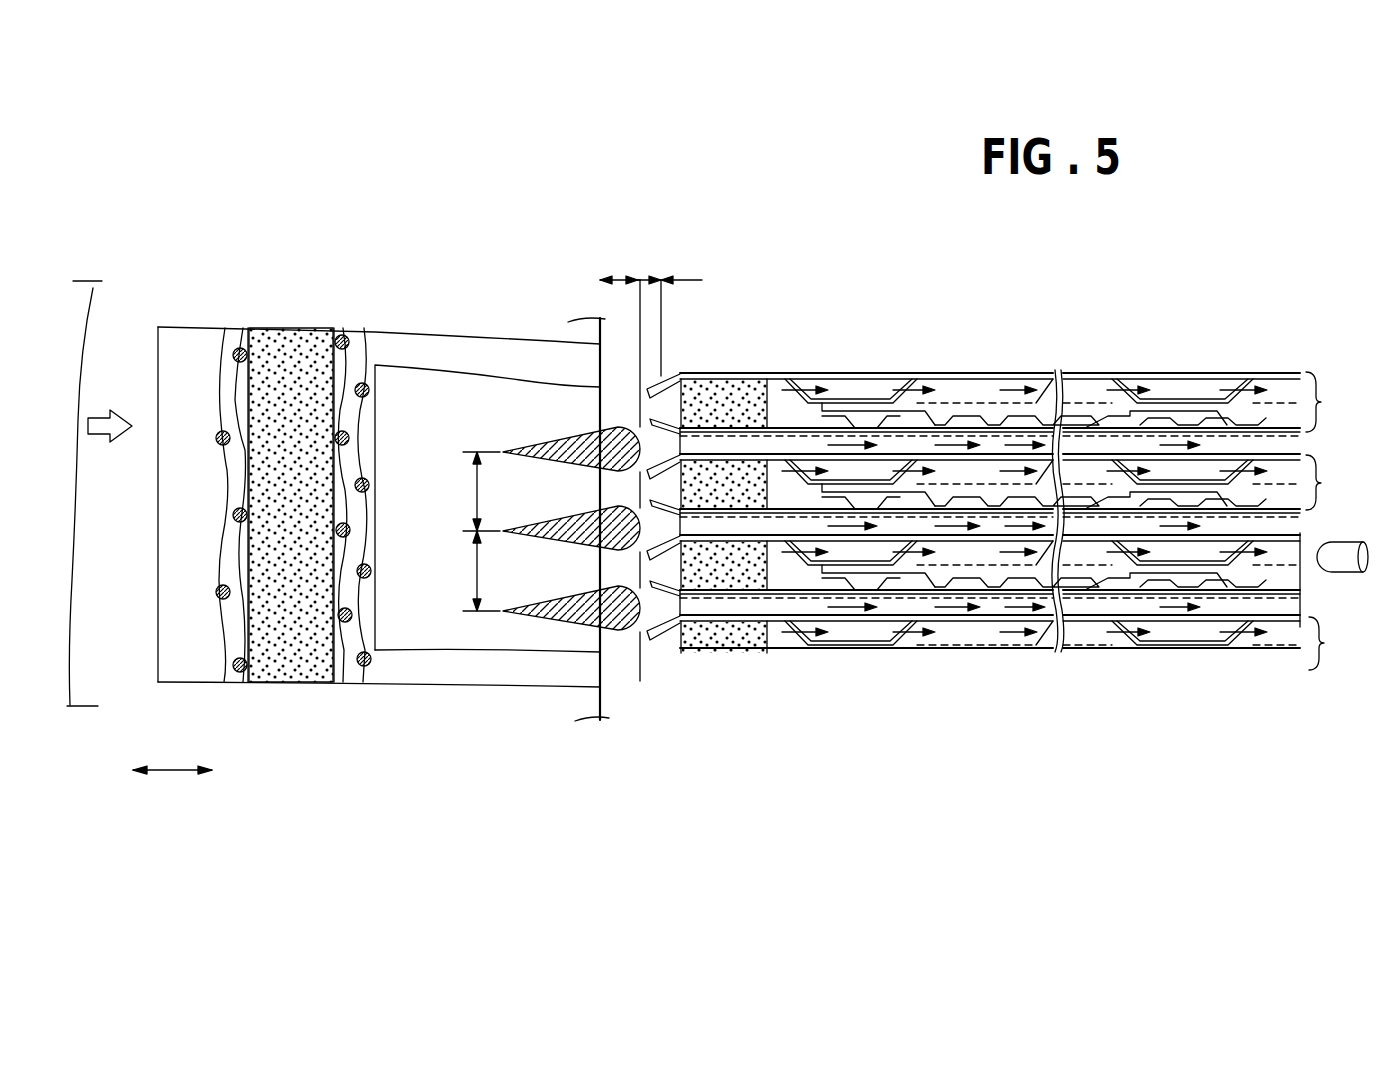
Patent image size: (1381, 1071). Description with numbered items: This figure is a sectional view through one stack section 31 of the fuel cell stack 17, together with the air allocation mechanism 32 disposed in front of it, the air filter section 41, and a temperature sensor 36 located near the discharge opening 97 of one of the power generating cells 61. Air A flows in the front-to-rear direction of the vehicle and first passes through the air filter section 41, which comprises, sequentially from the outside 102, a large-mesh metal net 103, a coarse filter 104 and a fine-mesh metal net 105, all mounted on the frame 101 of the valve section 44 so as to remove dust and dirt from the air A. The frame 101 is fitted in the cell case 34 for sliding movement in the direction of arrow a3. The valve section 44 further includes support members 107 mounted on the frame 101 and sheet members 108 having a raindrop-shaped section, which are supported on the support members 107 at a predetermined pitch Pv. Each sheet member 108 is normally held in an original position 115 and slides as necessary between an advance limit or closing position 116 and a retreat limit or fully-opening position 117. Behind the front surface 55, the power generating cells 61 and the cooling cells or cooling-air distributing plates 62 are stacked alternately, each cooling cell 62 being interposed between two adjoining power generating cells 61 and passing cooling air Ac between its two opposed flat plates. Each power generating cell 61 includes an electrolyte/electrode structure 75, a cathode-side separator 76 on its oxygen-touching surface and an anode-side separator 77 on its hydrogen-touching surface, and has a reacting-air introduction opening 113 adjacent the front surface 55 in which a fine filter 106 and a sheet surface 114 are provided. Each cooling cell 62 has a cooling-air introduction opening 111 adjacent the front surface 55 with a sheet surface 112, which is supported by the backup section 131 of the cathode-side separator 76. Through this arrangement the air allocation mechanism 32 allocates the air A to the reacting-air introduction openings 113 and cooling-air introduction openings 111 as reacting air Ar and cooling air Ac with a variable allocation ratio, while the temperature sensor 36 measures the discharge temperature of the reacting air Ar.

The fuel cell stack 17 is at (492, 422).
The stack section 31 is at (993, 501).
The air allocation mechanism 32 is at (523, 280).
The cell case 34 is at (93, 293).
The temperature sensor 36 is at (1352, 541).
The air filter section 41 is at (250, 505).
The valve section 44 is at (479, 326).
The front surface 55 is at (665, 662).
The power generating cell 61 is at (1303, 558).
The cooling cell 62 is at (905, 450).
The electrolyte/electrode structure 75 is at (940, 412).
The cathode-side separator 76 is at (977, 398).
The anode-side separator 77 is at (1032, 427).
The discharge opening 97 is at (1300, 574).
The frame 101 is at (158, 372).
The outside 102 is at (178, 509).
The large-mesh metal net 103 is at (225, 563).
The coarse filter 104 is at (290, 662).
The fine-mesh metal net 105 is at (375, 649).
The fine filter 106 is at (745, 516).
The support member 107 is at (437, 623).
The sheet member 108 is at (563, 428).
The cooling-air introduction opening 111 is at (735, 487).
The sheet surface 112 is at (658, 420).
The reacting-air introduction opening 113 is at (695, 455).
The sheet surface 114 is at (668, 382).
The original position 115 is at (638, 280).
The advance limit position 116 is at (660, 280).
The retreat limit position 117 is at (600, 280).
The backup section 131 is at (672, 637).
The reacting air Ar is at (819, 391).
The cooling air Ac is at (851, 440).
The pitch Pv is at (465, 531).
The air A is at (110, 407).
The sliding direction a3 is at (172, 750).